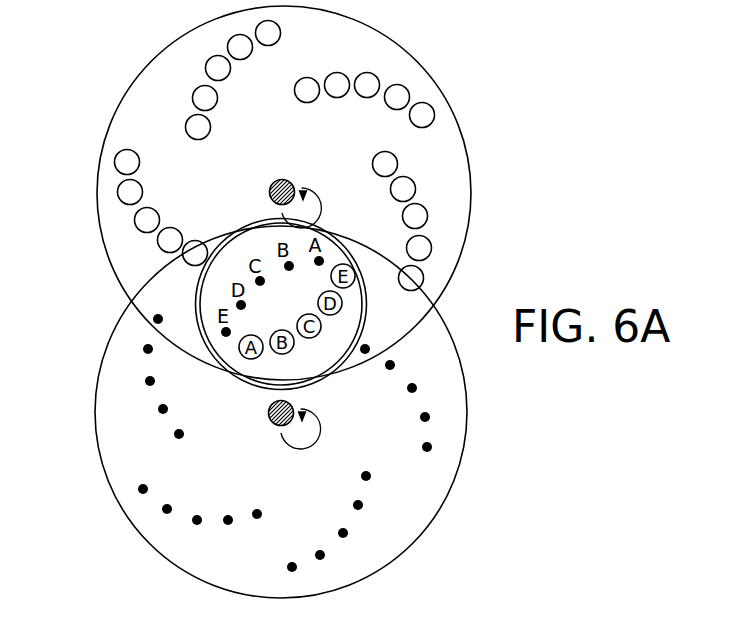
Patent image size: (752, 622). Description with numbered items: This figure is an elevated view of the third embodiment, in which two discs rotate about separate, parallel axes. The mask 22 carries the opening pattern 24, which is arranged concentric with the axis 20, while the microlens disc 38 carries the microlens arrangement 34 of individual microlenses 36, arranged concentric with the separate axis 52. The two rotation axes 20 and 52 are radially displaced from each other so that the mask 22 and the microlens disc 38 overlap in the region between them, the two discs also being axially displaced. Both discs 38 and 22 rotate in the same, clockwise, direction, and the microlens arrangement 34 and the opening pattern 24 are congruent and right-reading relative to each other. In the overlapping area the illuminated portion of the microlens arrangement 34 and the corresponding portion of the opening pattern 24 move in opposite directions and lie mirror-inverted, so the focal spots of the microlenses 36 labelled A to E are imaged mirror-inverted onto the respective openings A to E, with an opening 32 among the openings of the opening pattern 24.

The axis 20 is at (282, 427).
The mask 22 is at (147, 445).
The opening pattern 24 is at (140, 389).
The hole 32 is at (146, 350).
The microlens arrangement 34 is at (374, 65).
The microlenses 36 is at (217, 66).
The microlens disc 38 is at (147, 122).
The axis 52 is at (270, 192).